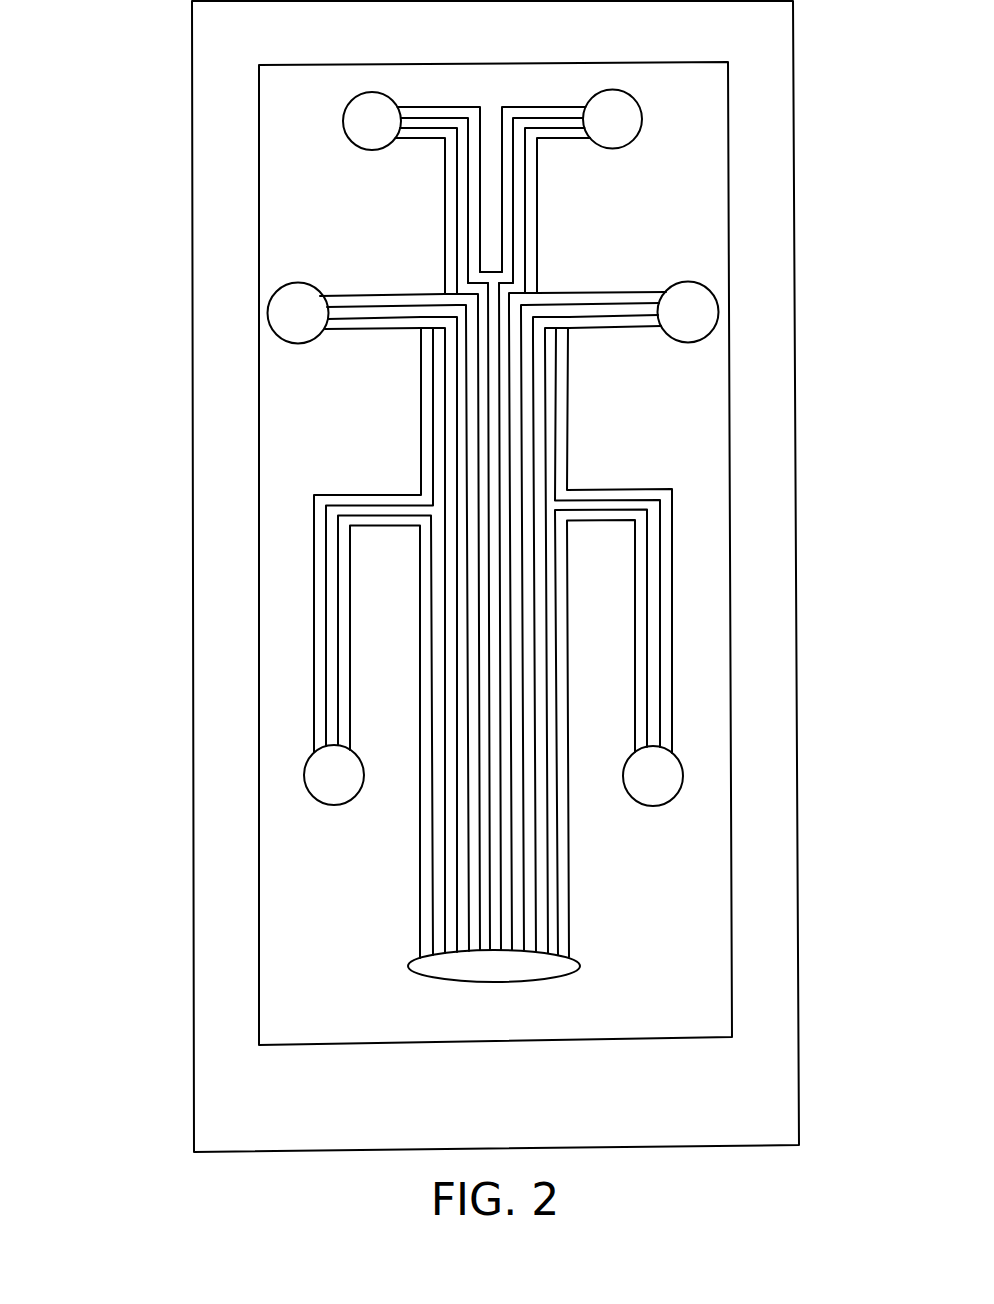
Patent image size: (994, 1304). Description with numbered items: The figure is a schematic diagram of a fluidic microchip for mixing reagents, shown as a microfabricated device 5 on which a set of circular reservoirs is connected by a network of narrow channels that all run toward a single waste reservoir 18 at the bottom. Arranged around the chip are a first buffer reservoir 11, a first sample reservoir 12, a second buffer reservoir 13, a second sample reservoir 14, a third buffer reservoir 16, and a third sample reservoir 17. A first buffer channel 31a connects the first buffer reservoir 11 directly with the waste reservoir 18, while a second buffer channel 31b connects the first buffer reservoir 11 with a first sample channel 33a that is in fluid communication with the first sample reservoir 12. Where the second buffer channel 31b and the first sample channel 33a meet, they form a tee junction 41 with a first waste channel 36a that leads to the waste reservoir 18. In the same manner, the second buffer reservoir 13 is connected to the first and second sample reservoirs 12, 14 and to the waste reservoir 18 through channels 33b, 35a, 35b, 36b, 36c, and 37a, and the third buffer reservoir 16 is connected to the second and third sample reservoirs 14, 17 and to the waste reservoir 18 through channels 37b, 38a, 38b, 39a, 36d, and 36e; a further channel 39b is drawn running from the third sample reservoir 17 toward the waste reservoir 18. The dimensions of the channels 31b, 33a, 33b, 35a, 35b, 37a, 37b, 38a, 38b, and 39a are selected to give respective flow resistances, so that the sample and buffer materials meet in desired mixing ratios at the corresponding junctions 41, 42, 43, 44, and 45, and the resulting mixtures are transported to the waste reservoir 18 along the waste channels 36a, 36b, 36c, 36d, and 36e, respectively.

The microfabricated device 5 is at (108, 630).
The first buffer reservoir 11 is at (332, 807).
The first sample reservoir 12 is at (271, 351).
The second buffer reservoir 13 is at (357, 132).
The second sample reservoir 14 is at (634, 142).
The third buffer reservoir 16 is at (720, 347).
The third sample reservoir 17 is at (652, 806).
The waste reservoir 18 is at (507, 984).
The first buffer channel 31a is at (418, 712).
The second buffer channel 31b is at (410, 492).
The first sample channel 33a is at (352, 343).
The channel 33b is at (352, 294).
The channel 35a is at (430, 139).
The channel 35b is at (418, 97).
The first waste channel 36a is at (447, 881).
The waste channel 36b is at (467, 905).
The waste channel 36c is at (500, 922).
The waste channel 36d is at (523, 903).
The waste channel 36e is at (543, 882).
The channel 37a is at (562, 97).
The channel 37b is at (553, 139).
The channel 38a is at (632, 292).
The channel 38b is at (640, 339).
The channel 39a is at (580, 490).
The channel 39b is at (630, 666).
The tee junction 41 is at (413, 331).
The junction 42 is at (443, 291).
The junction 43 is at (487, 268).
The junction 44 is at (538, 291).
The junction 45 is at (580, 329).